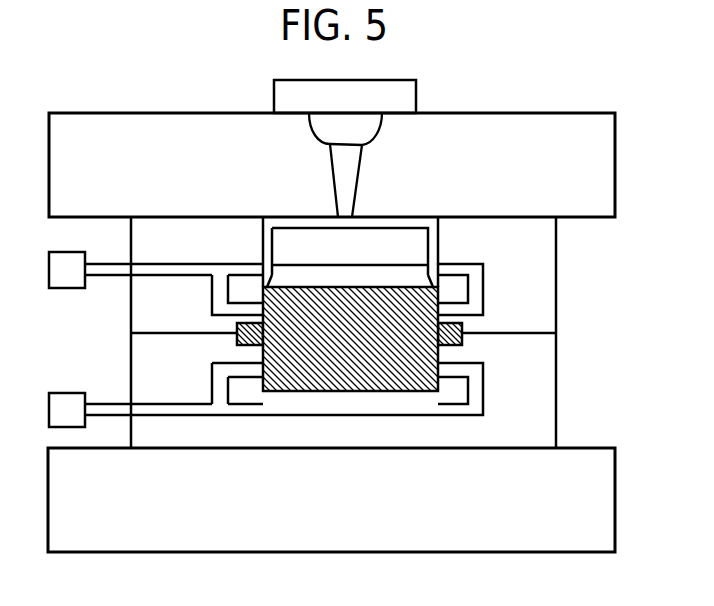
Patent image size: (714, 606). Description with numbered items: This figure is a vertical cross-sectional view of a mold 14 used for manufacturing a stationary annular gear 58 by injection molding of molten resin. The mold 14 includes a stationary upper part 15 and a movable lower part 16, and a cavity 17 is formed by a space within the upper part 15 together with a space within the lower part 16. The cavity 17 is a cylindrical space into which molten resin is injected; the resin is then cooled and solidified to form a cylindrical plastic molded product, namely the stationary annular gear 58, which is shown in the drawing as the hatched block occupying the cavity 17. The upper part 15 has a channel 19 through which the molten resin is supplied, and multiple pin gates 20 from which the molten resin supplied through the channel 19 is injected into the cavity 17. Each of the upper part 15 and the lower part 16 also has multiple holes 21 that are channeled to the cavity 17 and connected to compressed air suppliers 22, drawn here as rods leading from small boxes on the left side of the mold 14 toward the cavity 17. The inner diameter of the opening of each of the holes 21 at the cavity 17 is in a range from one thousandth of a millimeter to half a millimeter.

The mold 14 is at (468, 101).
The stationary upper part 15 is at (145, 112).
The movable lower part 16 is at (208, 553).
The cavity 17 is at (410, 392).
The channel 19 is at (385, 216).
The pin gates 20 is at (265, 286).
The holes 21 is at (165, 277).
The compressed air suppliers 22 is at (66, 289).
The stationary annular gear 58 is at (433, 353).